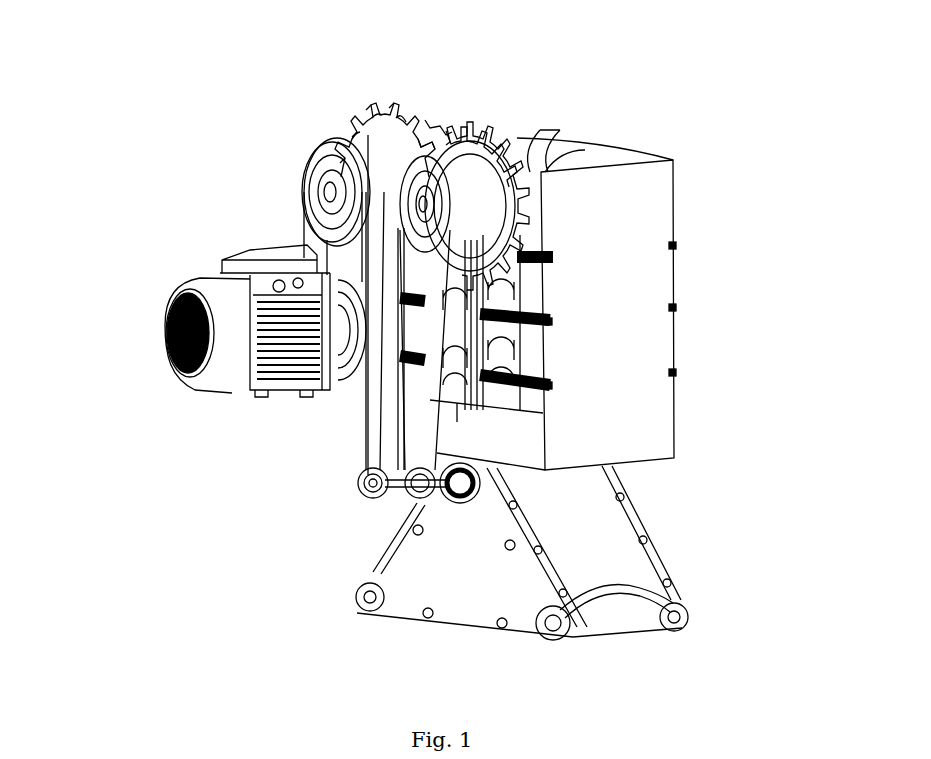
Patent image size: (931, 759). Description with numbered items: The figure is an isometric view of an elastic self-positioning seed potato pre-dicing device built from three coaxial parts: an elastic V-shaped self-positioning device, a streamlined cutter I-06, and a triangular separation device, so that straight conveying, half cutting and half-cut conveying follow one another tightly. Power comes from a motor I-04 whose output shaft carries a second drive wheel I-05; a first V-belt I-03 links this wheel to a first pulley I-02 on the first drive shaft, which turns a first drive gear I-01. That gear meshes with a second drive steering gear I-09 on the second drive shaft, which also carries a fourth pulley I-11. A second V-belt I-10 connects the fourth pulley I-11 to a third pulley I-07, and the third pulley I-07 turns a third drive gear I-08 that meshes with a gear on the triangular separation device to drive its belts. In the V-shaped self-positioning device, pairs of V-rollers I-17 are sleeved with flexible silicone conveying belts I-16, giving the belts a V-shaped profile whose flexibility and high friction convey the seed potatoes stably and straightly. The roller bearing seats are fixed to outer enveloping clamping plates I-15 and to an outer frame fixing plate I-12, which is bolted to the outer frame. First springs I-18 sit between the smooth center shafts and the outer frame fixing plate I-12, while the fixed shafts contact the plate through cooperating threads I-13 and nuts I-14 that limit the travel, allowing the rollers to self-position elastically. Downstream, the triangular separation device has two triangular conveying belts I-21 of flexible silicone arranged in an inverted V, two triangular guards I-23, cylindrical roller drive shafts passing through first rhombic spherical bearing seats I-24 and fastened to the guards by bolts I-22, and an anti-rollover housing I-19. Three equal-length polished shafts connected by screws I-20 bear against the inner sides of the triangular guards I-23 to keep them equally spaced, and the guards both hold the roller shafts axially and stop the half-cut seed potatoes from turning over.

The first drive gear 01 is at (340, 122).
The first pulley 02 is at (308, 147).
The first V-belt 03 is at (308, 245).
The motor 04 is at (168, 302).
The second drive wheel 05 is at (368, 357).
The streamlined cutter 06 is at (368, 426).
The third pulley 07 is at (388, 498).
The third drive gear 08 is at (410, 498).
The second drive steering gear 09 is at (433, 122).
The second V-belt 10 is at (440, 160).
The fourth pulley 11 is at (523, 138).
The outer frame fixing plate 12 is at (660, 190).
The thread 13 is at (673, 245).
The nut 14 is at (673, 307).
The outer enveloping clamping plate 15 is at (543, 303).
The flexible silicone conveying belt 16 is at (543, 340).
The V-roller 17 is at (543, 373).
The first spring 18 is at (547, 390).
The anti-rollover housing 19 is at (610, 523).
The screw 20 is at (640, 540).
The triangular conveying belt 21 is at (633, 607).
The bolt 22 is at (502, 620).
The triangular guard 23 is at (477, 588).
The first rhombic spherical bearing seat 24 is at (372, 600).